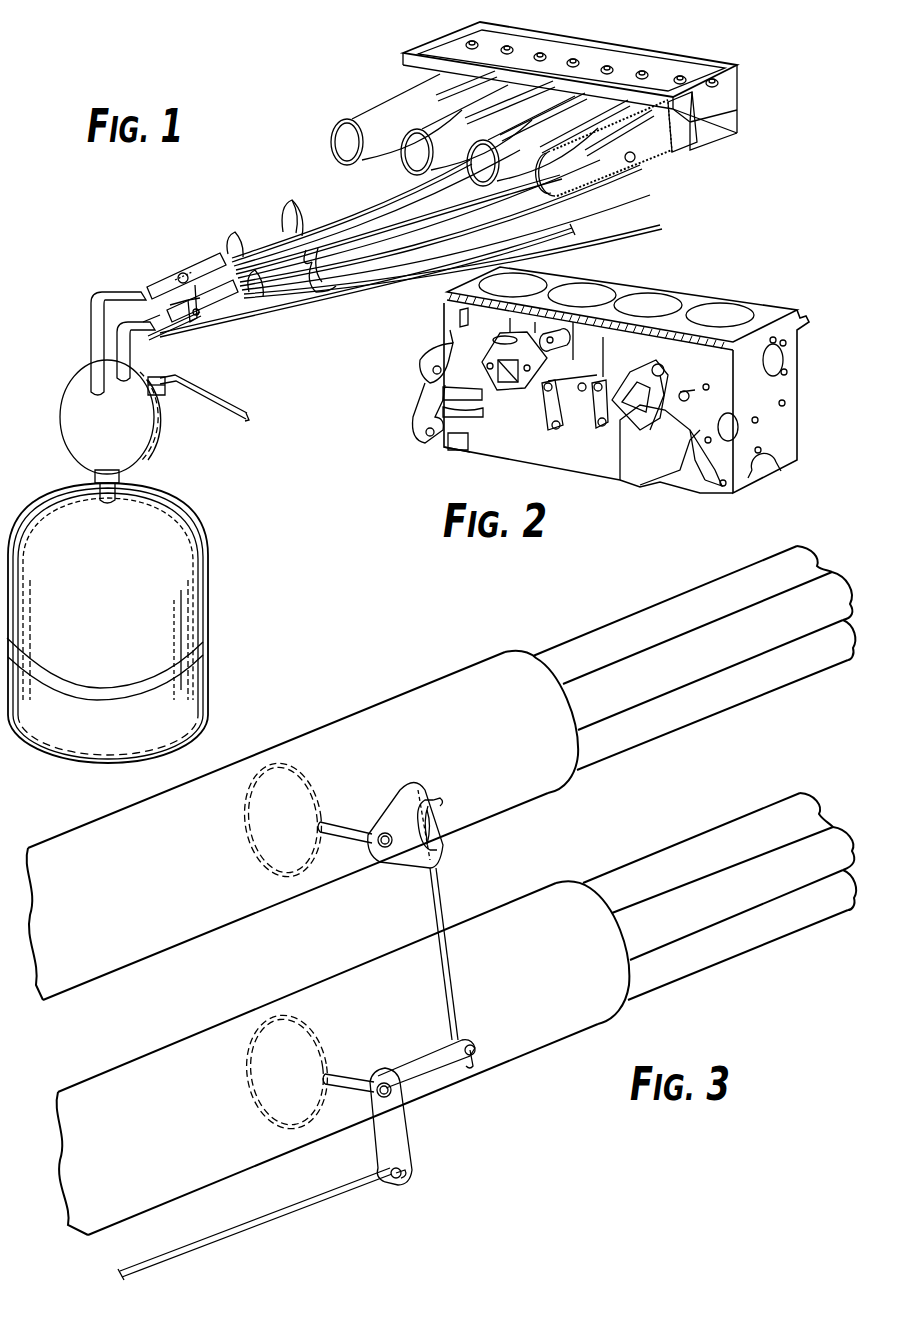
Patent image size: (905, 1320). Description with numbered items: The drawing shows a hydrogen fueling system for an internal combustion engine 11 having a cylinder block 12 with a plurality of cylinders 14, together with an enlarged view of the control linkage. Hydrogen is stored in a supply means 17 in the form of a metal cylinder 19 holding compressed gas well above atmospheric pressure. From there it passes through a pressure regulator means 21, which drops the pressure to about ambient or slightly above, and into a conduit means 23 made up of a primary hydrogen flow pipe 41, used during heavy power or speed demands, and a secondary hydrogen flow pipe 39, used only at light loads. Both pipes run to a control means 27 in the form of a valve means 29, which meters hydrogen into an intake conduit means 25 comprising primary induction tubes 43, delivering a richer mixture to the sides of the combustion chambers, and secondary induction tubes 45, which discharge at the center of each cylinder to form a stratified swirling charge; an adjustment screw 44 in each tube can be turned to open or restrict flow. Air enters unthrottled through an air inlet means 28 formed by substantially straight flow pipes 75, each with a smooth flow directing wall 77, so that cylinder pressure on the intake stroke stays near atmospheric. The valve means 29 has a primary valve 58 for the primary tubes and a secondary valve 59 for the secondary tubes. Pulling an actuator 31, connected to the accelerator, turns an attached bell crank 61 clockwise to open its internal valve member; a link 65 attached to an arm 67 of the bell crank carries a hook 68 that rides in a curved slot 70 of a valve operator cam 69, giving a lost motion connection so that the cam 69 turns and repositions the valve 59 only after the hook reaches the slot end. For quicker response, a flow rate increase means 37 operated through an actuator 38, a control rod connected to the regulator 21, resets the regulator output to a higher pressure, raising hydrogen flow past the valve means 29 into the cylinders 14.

In FIG. 1, the internal combustion engine 11 is at (663, 30).
In FIG. 1, the cylinder block 12 is at (443, 37).
In FIG. 2, the cylinder block 12 is at (753, 307).
In FIG. 2, the cylinders 14 is at (533, 285).
In FIG. 1, the supply means 17 is at (208, 577).
In FIG. 1, the metal cylinder 19 is at (180, 510).
In FIG. 1, the pressure regulator means 21 is at (157, 437).
In FIG. 1, the conduit means 23 is at (110, 297).
In FIG. 1, the intake conduit means 25 is at (260, 218).
In FIG. 1, the control means 27 is at (235, 338).
In FIG. 3, the control means 27 is at (333, 1228).
In FIG. 1, the air inlet means 28 is at (383, 110).
In FIG. 1, the valve means 29 is at (213, 307).
In FIG. 3, the valve means 29 is at (487, 1130).
In FIG. 1, the actuator 31 is at (173, 338).
In FIG. 3, the actuator 31 is at (343, 1183).
In FIG. 1, the flow rate increase means 37 is at (160, 393).
In FIG. 1, the actuator 38 is at (248, 420).
In FIG. 1, the secondary hydrogen flow conduit or pipe 39 is at (162, 283).
In FIG. 1, the primary hydrogen flow conduit or pipe 41 is at (143, 325).
In FIG. 1, the primary induction tubes 43 is at (317, 278).
In FIG. 1, the adjustment screw 44 is at (253, 266).
In FIG. 1, the secondary induction tubes 45 is at (286, 206).
In FIG. 1, the primary valve 58 is at (153, 330).
In FIG. 3, the primary valve 58 is at (293, 1127).
In FIG. 1, the secondary valve 59 is at (182, 275).
In FIG. 3, the secondary valve 59 is at (332, 862).
In FIG. 3, the bell crank 61 is at (393, 1130).
In FIG. 3, the link 65 is at (455, 1003).
In FIG. 3, the arm 67 is at (443, 1067).
In FIG. 3, the hook 68 is at (433, 800).
In FIG. 3, the valve operator cam 69 is at (400, 807).
In FIG. 3, the curved slot 70 is at (427, 845).
In FIG. 1, the straight flow pipes 75 is at (340, 137).
In FIG. 1, the flow directing wall 77 is at (632, 160).